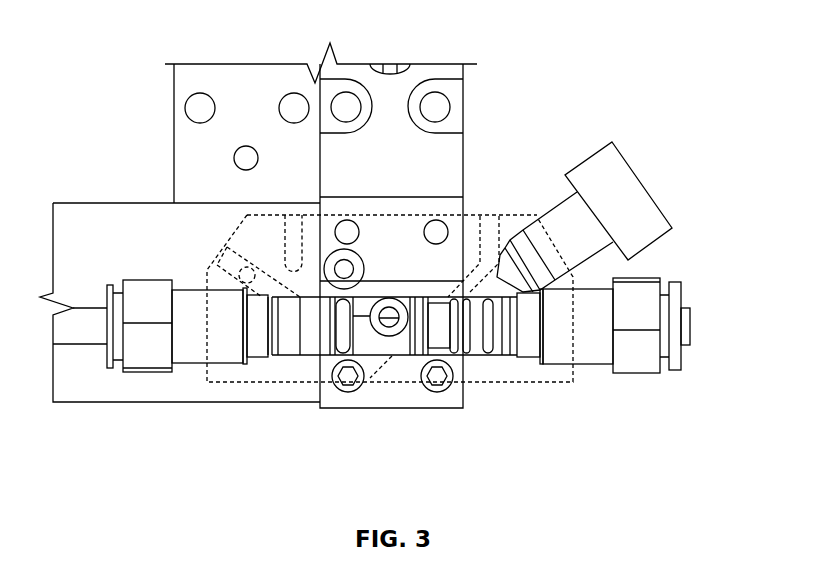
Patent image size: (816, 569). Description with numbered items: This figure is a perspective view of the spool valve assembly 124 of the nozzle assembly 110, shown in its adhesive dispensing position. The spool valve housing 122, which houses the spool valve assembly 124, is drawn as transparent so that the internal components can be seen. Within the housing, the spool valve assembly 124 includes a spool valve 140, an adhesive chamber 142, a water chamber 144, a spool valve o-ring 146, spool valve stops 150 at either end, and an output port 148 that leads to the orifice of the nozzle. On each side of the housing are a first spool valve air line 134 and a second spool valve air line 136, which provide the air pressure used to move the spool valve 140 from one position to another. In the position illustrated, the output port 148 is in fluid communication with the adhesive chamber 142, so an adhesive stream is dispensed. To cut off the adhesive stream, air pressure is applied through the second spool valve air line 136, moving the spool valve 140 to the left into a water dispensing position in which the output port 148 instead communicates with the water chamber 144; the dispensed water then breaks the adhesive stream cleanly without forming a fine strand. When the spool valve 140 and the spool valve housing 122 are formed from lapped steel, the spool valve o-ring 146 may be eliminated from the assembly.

The nozzle assembly 110 is at (570, 36).
The spool valve housing 122 is at (507, 215).
The spool valve assembly 124 is at (557, 453).
The first spool valve air line 134 is at (88, 326).
The second spool valve air line 136 is at (692, 328).
The spool valve 140 is at (475, 323).
The adhesive chamber 142 is at (390, 322).
The water chamber 144 is at (440, 332).
The spool valve o-ring 146 is at (317, 333).
The output port 148 is at (340, 333).
The spool valve stops 150 is at (314, 330).